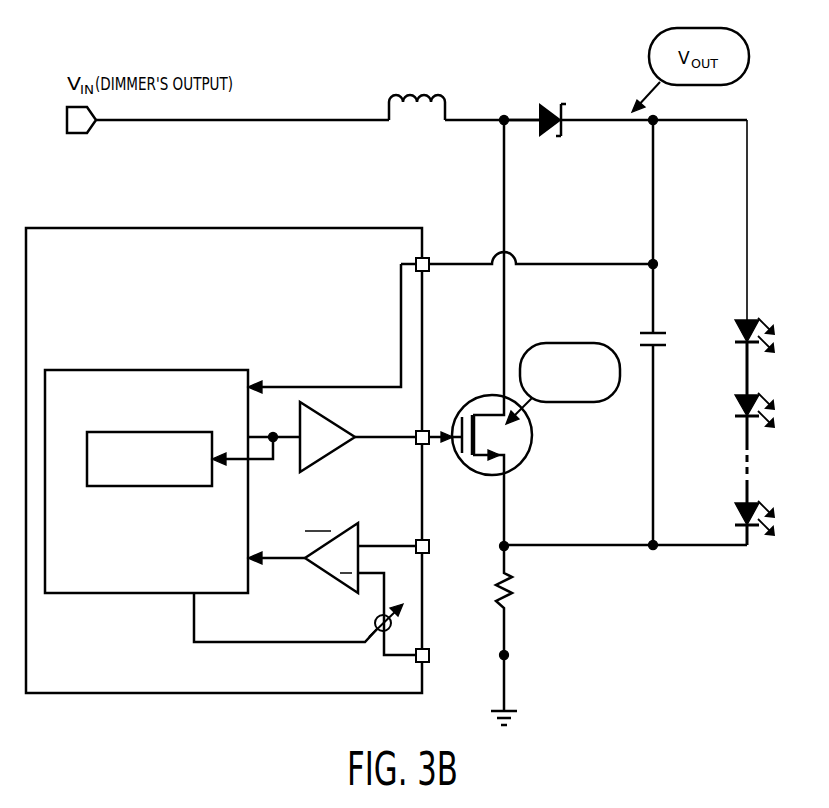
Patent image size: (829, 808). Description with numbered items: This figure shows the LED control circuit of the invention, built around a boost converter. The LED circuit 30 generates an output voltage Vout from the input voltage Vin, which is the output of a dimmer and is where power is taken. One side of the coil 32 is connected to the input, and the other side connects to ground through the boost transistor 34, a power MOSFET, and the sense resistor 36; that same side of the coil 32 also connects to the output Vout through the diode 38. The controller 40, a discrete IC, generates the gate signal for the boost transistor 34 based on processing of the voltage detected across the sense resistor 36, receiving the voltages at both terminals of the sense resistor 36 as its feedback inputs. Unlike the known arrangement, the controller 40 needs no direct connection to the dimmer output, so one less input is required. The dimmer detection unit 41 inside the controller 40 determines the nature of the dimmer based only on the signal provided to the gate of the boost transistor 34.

The LED circuit 30 is at (516, 76).
The coil 32 is at (393, 96).
The boost transistor 34 is at (530, 455).
The sense resistor 36 is at (508, 606).
The diode 38 is at (549, 104).
The controller 40 is at (262, 228).
The dimmer detection unit 41 is at (116, 432).